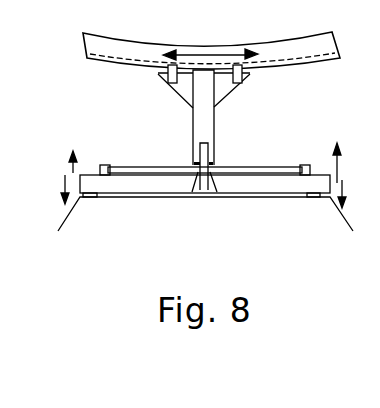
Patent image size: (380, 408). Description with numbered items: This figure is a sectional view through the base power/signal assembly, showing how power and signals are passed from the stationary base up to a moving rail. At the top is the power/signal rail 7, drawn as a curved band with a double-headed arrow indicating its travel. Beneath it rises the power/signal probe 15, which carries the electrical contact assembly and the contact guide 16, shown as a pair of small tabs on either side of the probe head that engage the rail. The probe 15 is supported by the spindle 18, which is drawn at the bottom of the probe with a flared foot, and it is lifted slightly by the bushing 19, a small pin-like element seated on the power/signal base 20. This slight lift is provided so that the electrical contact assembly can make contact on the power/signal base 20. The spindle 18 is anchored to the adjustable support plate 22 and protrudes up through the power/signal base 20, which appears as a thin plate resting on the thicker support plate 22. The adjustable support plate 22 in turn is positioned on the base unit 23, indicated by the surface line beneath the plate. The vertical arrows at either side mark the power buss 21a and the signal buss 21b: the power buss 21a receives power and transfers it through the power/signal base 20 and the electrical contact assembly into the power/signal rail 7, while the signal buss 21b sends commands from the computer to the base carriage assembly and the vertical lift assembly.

The power/signal rail 7 is at (318, 49).
The power/signal probe 15 is at (203, 118).
The contact guide 16 is at (176, 86).
The spindle 18 is at (211, 204).
The bushing 19 is at (213, 163).
The power/signal base 20 is at (162, 166).
The power buss 21a is at (88, 167).
The signal buss 21b is at (312, 171).
The adjustable support plate 22 is at (138, 181).
The base unit 23 is at (295, 233).